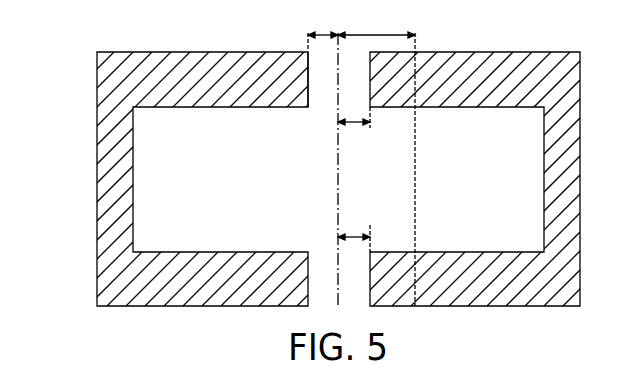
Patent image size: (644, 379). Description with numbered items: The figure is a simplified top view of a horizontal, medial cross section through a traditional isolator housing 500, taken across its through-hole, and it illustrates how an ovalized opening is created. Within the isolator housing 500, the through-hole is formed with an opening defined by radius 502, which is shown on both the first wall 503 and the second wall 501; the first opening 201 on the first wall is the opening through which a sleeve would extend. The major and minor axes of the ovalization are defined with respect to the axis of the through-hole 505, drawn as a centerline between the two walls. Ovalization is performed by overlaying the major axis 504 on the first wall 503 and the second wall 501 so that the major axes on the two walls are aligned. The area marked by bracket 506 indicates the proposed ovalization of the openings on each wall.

The isolator housing 500 is at (322, 181).
The second wall 501 is at (173, 72).
The radius 502 is at (320, 33).
The first wall 503 is at (173, 287).
The major axis 504 is at (375, 34).
The through-hole axis 505 is at (333, 185).
The bracket 506 is at (370, 130).
The first opening 201 is at (325, 97).